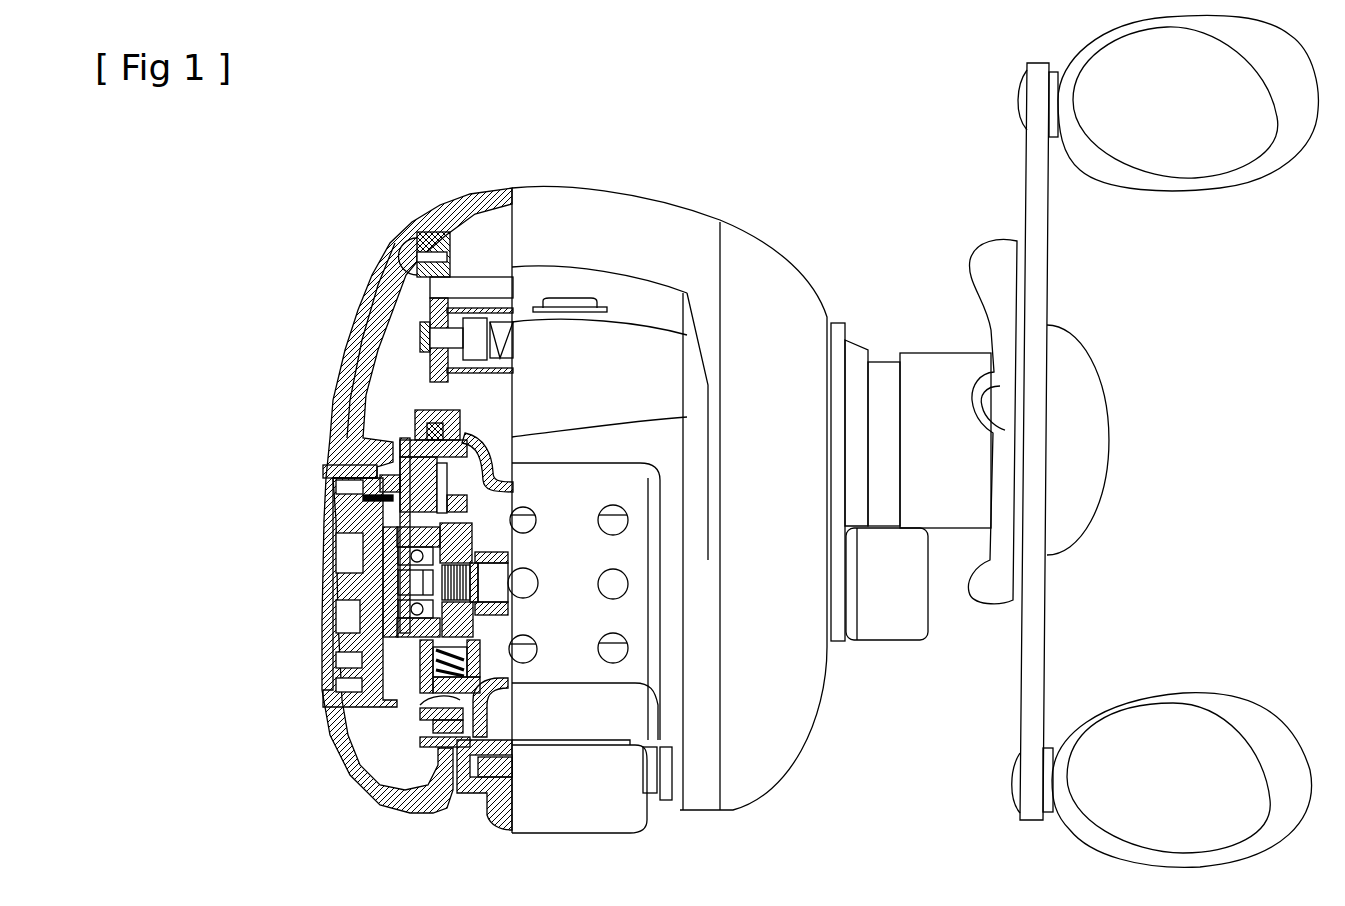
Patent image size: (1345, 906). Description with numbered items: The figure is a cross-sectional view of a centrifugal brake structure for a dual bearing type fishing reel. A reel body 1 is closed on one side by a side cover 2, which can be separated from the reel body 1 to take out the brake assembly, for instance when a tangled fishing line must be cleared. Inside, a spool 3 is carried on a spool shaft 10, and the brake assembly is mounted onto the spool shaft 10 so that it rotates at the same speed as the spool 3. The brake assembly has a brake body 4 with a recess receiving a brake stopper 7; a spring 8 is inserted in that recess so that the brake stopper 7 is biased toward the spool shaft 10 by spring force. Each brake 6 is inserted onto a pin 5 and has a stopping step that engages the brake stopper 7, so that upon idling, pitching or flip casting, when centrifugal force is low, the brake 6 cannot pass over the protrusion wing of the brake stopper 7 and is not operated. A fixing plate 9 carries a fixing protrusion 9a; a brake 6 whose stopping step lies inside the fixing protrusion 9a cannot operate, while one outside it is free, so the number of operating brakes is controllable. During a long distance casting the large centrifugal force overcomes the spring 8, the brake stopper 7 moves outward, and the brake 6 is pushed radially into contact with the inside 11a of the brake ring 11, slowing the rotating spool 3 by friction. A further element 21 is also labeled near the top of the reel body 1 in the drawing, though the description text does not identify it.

The reel body 1 is at (433, 808).
The side cover 2 is at (378, 808).
The spool 3 is at (493, 550).
The brake body 4 is at (423, 522).
The pin 5 is at (432, 455).
The brake 6 is at (430, 490).
The brake stopper 7 is at (430, 683).
The spring 8 is at (465, 672).
The fixing plate 9 is at (472, 650).
The fixing protrusion 9a is at (430, 503).
The spool shaft 10 is at (492, 585).
The brake ring 11 is at (455, 440).
The inside of brake ring 11a is at (488, 468).
The seal tab 21 is at (568, 300).